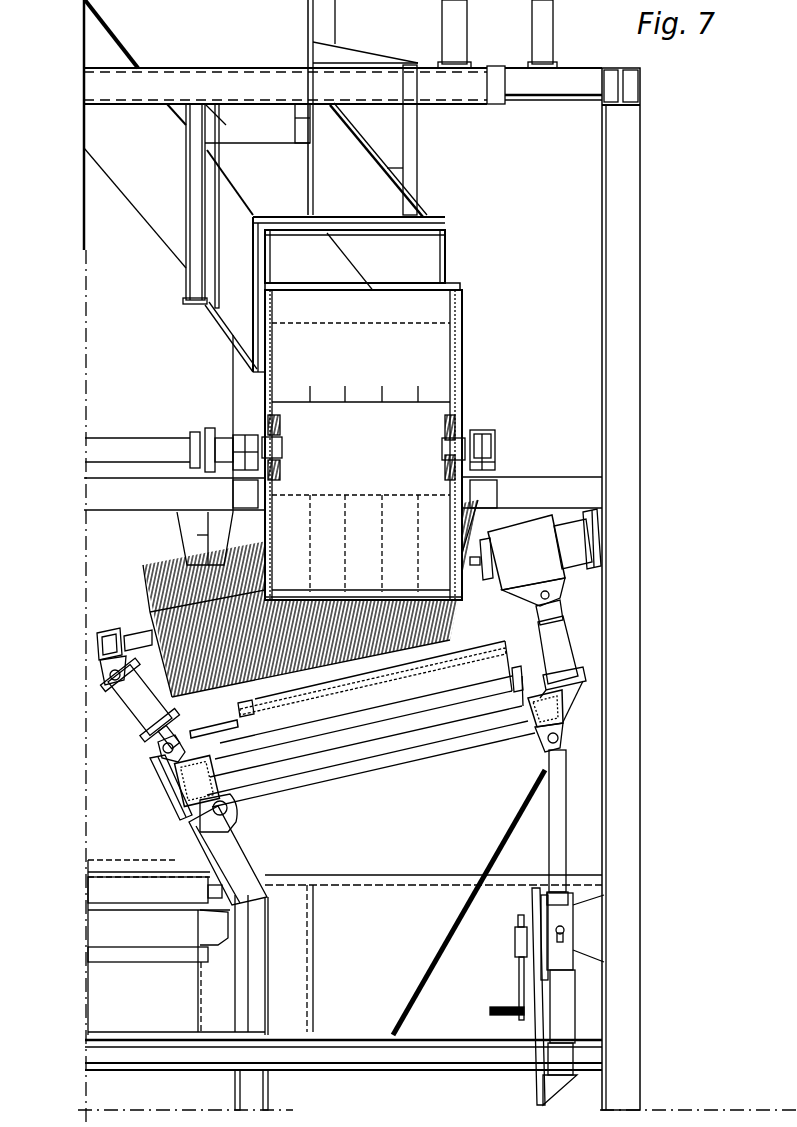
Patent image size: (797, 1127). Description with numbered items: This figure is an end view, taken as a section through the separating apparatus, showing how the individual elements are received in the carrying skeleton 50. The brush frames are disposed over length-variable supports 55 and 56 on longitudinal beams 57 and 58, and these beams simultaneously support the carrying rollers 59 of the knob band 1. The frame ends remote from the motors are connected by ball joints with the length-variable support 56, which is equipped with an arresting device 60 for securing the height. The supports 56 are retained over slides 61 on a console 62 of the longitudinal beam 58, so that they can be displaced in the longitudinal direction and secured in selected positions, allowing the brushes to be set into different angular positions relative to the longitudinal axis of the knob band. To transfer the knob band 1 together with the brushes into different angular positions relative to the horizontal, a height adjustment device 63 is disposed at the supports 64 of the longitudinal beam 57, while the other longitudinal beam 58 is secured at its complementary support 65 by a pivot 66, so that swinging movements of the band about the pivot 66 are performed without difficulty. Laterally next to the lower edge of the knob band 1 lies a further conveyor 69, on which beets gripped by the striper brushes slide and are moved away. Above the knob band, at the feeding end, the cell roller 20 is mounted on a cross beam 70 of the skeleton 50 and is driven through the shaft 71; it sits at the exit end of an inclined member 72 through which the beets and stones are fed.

The knob band 1 is at (292, 697).
The cell roller 20 is at (455, 385).
The carrying skeleton 50 is at (630, 383).
The length-variable support 55 is at (553, 655).
The length-variable support 56 is at (152, 730).
The longitudinal beam 57 is at (557, 712).
The longitudinal beam 58 is at (205, 788).
The carrying rollers 59 is at (380, 710).
The arresting device 60 is at (130, 712).
The slides 61 is at (179, 748).
The console 62 is at (172, 790).
The height adjustment device 63 is at (517, 930).
The supports 64 is at (555, 850).
The complementary support 65 is at (245, 880).
The pivot 66 is at (227, 813).
The conveyor 69 is at (130, 850).
The cross beam 70 is at (537, 492).
The shaft 71 is at (160, 447).
The member 72 is at (455, 257).